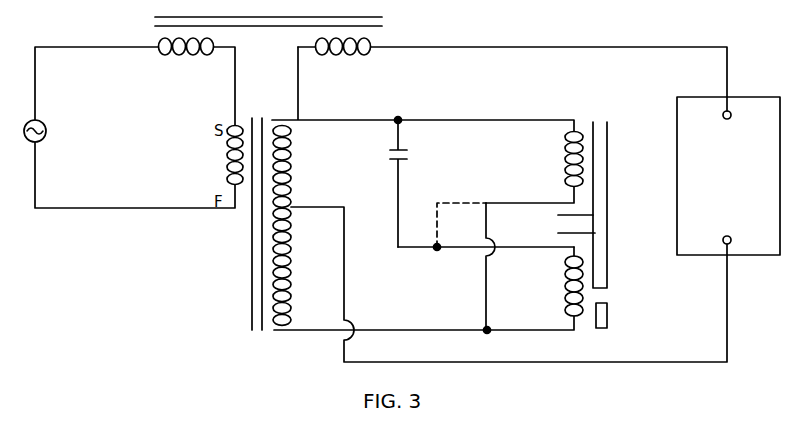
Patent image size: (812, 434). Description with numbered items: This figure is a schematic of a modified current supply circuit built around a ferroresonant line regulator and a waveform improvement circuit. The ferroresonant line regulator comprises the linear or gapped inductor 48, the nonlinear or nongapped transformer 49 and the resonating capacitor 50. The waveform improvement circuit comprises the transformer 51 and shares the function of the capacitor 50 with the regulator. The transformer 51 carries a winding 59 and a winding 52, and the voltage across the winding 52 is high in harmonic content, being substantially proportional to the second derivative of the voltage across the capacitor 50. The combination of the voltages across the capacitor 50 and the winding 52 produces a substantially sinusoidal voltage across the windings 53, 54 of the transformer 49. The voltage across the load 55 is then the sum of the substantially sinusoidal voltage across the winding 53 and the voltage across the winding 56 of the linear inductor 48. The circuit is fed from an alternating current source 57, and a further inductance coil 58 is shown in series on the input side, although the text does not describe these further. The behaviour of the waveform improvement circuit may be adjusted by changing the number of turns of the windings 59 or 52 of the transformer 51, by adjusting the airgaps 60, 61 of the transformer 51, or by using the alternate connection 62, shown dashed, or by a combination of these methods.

The linear inductor 48 is at (281, 17).
The nonlinear transformer 49 is at (248, 283).
The resonating capacitor 50 is at (416, 183).
The transformer 51 is at (613, 205).
The winding 52 is at (560, 301).
The winding 53 is at (289, 187).
The winding 54 is at (288, 286).
The load 55 is at (676, 228).
The winding 56 is at (352, 56).
The alternating current source 57 is at (46, 131).
The inductance coil 58 is at (183, 56).
The winding 59 is at (562, 176).
The airgap 60 is at (560, 240).
The airgap 61 is at (611, 316).
The alternate connection 62 is at (433, 228).